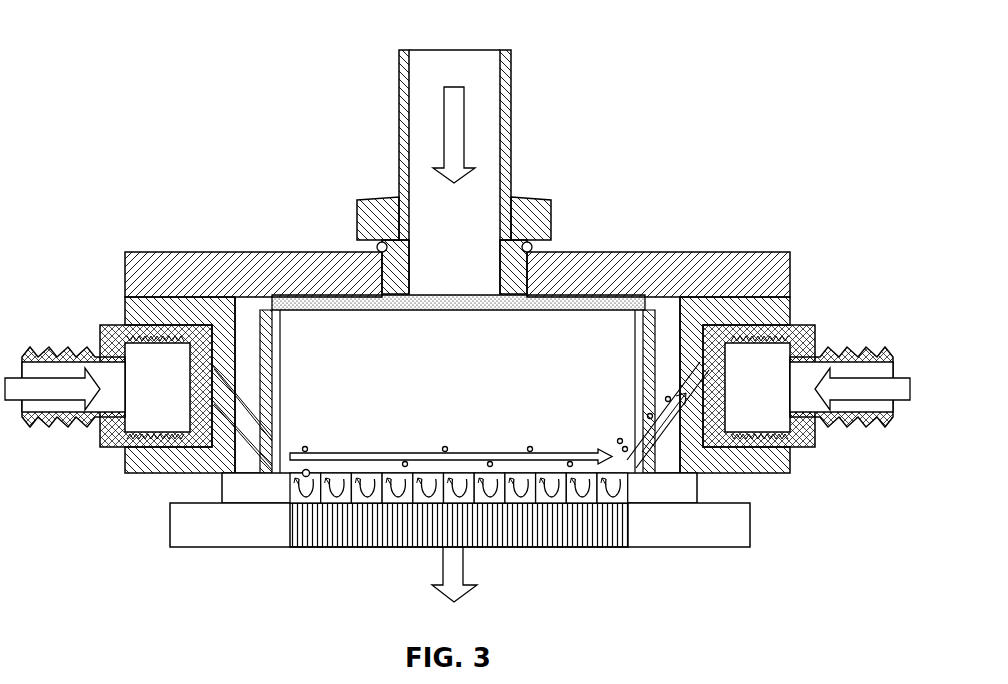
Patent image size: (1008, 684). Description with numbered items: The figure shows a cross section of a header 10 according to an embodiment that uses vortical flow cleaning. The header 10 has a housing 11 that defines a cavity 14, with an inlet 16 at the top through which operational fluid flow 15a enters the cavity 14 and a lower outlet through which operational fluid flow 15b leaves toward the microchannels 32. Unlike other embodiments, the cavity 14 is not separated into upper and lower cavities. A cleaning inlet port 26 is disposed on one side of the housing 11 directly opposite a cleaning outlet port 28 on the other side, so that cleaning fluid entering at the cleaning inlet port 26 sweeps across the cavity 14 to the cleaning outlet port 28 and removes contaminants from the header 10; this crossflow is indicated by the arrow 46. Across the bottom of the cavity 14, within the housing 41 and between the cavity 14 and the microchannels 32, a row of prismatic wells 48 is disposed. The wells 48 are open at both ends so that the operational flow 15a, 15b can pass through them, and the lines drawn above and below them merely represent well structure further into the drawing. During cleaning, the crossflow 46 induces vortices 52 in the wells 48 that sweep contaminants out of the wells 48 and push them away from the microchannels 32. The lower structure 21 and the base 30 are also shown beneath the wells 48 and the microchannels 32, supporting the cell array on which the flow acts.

The header 10 is at (638, 250).
The housing 11 is at (790, 456).
The cavity 14 is at (478, 394).
The operational fluid flow 15a is at (440, 128).
The operational fluid flow 15b is at (465, 565).
The inlet 16 is at (511, 125).
The cell array 21 is at (375, 547).
The cleaning inlet port 26 is at (68, 345).
The cleaning outlet port 28 is at (830, 333).
The base plate 30 is at (750, 525).
The microchannels 32 is at (590, 547).
The housing 41 is at (697, 490).
The fluid crossflow 46 is at (355, 453).
The wells 48 is at (630, 490).
The vortices 52 is at (300, 478).